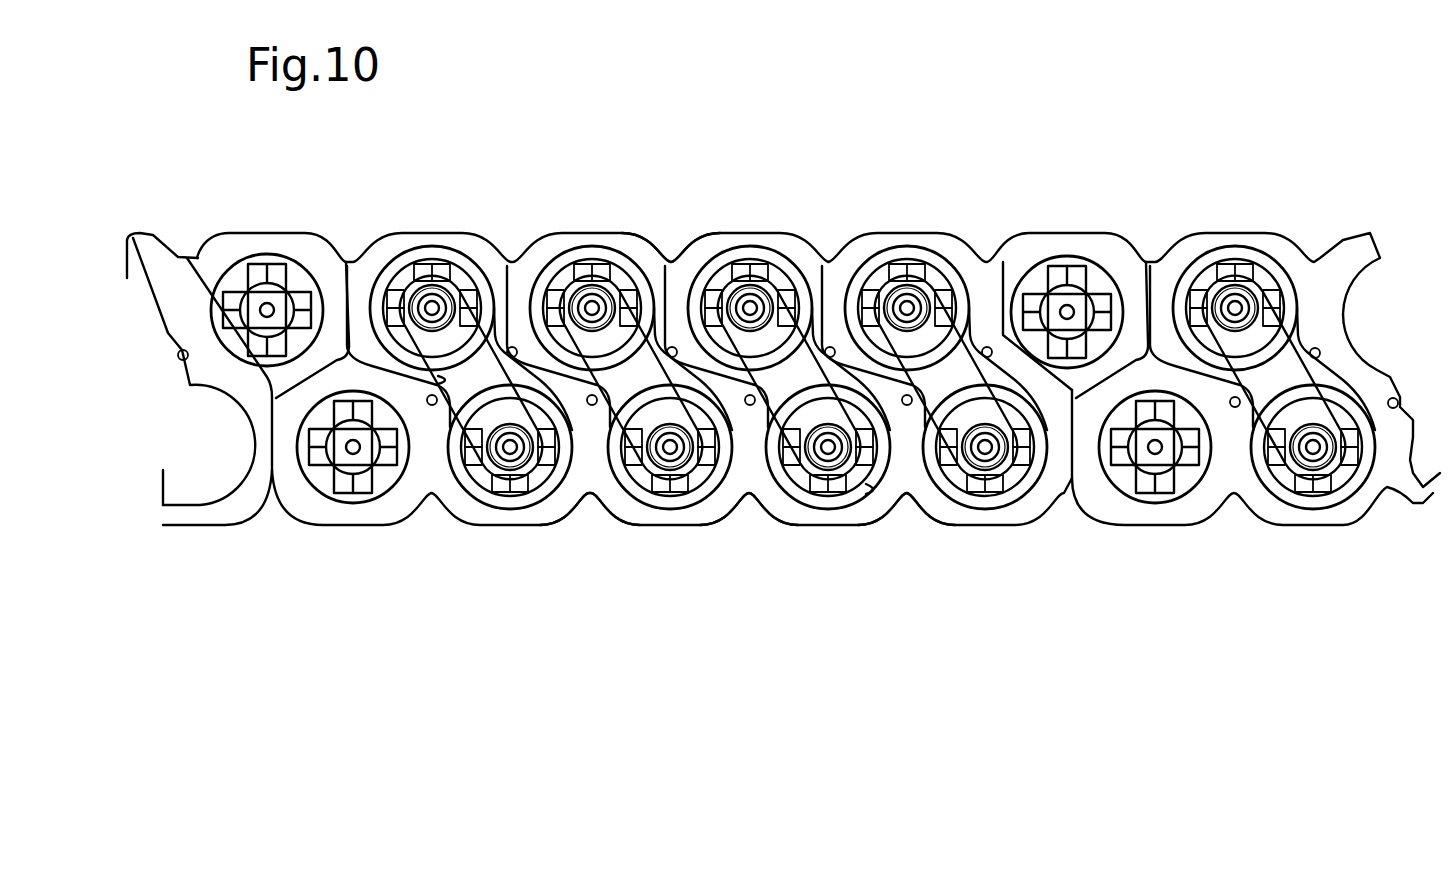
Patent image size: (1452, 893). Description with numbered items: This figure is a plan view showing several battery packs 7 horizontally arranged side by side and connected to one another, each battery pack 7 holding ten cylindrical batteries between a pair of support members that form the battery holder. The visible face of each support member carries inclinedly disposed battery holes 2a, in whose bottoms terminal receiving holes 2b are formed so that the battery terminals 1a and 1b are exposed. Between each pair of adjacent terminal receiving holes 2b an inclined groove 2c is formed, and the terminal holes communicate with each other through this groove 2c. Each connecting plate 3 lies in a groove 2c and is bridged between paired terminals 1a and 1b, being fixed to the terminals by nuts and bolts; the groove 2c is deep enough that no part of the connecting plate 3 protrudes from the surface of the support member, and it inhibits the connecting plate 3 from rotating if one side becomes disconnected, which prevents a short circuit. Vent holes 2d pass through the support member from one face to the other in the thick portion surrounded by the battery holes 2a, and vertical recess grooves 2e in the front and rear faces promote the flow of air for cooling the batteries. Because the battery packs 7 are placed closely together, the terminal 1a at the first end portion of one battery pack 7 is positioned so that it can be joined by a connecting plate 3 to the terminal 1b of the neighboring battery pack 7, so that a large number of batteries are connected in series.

The terminal 1a is at (350, 455).
The terminal 1b is at (266, 300).
The battery hole 2a is at (216, 285).
The terminal receiving hole 2b is at (470, 265).
The groove 2c is at (440, 380).
The vent hole 2d is at (590, 400).
The vertical recess groove 2e is at (670, 260).
The connecting plate 3 is at (465, 345).
The battery pack 7 is at (313, 232).